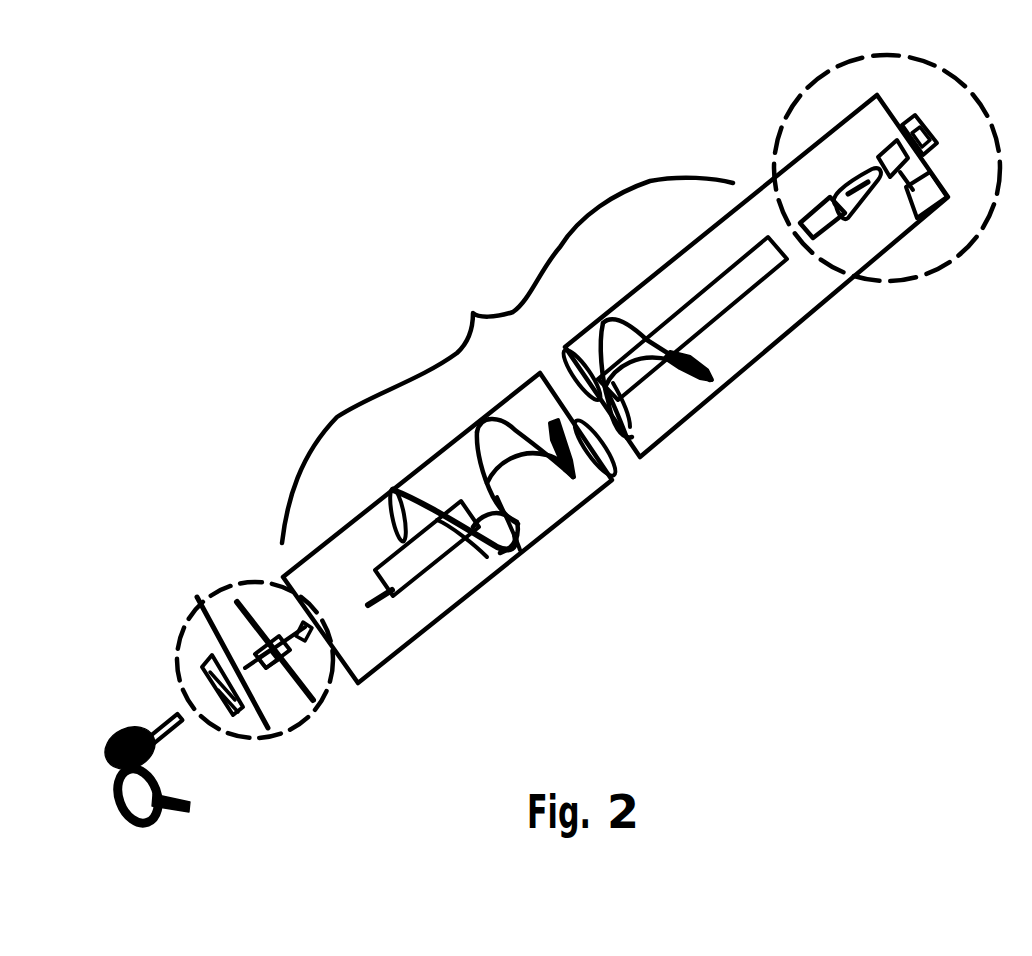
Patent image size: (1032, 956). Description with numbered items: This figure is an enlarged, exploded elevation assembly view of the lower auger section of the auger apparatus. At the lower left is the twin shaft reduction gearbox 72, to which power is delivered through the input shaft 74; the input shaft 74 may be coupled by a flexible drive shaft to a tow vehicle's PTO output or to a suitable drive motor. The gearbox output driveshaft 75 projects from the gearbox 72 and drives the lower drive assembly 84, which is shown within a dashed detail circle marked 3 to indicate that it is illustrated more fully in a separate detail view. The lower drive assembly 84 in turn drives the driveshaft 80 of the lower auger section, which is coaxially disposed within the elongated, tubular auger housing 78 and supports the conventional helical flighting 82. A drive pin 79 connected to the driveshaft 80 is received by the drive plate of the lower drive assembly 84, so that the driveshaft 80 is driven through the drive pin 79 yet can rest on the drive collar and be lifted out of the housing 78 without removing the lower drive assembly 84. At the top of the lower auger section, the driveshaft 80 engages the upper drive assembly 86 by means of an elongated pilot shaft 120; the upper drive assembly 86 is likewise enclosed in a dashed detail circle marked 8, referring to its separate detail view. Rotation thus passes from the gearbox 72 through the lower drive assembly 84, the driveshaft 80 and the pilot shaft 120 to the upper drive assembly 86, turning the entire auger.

The twin shaft reduction gearbox 72 is at (125, 717).
The input shaft 74 is at (173, 812).
The gearbox output driveshaft 75 is at (168, 713).
The auger housing 78 is at (478, 585).
The drive pin 79 is at (397, 492).
The driveshaft 80 is at (533, 477).
The helical flighting 82 is at (418, 490).
The lower drive assembly 84 is at (188, 592).
The upper drive assembly 86 is at (800, 70).
The pilot shaft 120 is at (817, 208).
The detail of FIG. 3 is at (255, 671).
The detail of FIG. 8 is at (912, 202).